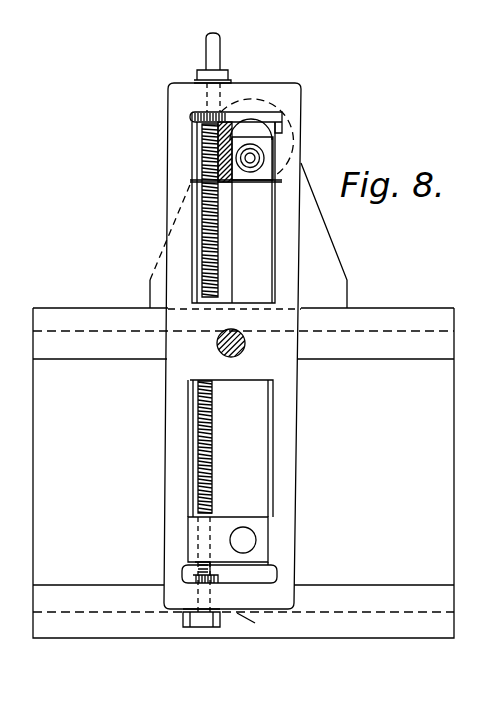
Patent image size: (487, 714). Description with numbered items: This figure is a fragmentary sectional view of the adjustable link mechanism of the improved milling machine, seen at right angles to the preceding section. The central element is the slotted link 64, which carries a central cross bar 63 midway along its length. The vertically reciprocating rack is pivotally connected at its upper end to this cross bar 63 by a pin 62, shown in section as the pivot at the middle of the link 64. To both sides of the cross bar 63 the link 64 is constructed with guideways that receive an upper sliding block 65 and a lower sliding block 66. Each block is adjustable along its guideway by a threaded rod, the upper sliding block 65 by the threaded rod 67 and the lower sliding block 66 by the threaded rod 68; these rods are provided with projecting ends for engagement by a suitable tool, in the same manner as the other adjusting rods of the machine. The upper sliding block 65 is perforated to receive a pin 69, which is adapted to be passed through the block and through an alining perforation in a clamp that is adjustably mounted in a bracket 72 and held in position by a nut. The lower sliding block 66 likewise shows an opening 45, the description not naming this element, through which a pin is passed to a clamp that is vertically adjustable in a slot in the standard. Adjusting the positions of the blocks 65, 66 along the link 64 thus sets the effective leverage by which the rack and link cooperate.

The hole in lower block 45 is at (252, 540).
The pin 62 is at (236, 329).
The central cross bar 63 is at (252, 367).
The slotted link 64 is at (170, 157).
The sliding block 65 is at (270, 162).
The lower sliding block 66 is at (213, 527).
The threaded rod 67 is at (205, 228).
The threaded rod 68 is at (200, 458).
The pin 69 is at (283, 128).
The bracket 72 is at (151, 280).